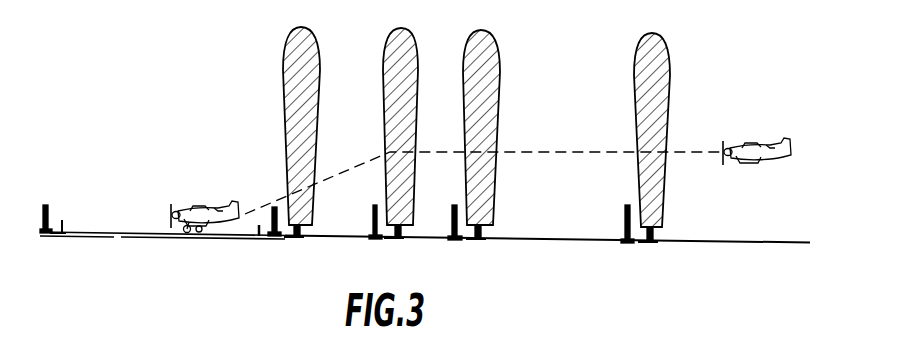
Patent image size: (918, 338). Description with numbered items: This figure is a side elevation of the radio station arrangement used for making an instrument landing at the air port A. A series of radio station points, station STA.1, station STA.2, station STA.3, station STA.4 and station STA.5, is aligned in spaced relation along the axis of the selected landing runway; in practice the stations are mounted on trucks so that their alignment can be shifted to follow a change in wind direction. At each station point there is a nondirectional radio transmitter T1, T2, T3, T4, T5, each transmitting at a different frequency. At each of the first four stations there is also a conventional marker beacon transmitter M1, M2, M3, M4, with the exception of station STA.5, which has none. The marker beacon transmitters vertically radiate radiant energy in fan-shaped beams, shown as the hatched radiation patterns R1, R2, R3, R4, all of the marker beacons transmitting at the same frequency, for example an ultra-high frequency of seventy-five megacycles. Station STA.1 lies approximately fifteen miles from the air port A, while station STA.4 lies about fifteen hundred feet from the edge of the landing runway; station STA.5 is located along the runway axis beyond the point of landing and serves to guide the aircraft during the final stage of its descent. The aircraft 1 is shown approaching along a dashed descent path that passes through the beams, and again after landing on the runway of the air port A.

The aircraft 1 is at (190, 210).
The air port A is at (146, 232).
The radiation pattern of marker beacon M1 R1 is at (660, 38).
The radiation pattern of marker beacon M2 R2 is at (496, 36).
The radiation pattern of marker beacon M3 R3 is at (412, 34).
The radiation pattern of marker beacon M4 R4 is at (312, 34).
The marker beacon transmitter M1 is at (655, 230).
The marker beacon transmitter M2 is at (482, 230).
The marker beacon transmitter M3 is at (400, 230).
The marker beacon transmitter M4 is at (302, 228).
The nondirectional radio transmitter T1 is at (627, 205).
The nondirectional radio transmitter T2 is at (455, 205).
The nondirectional radio transmitter T3 is at (375, 205).
The nondirectional radio transmitter T4 is at (275, 207).
The nondirectional radio transmitter T5 is at (45, 205).
The radio station point STA.1 is at (640, 243).
The radio station point STA.2 is at (470, 240).
The radio station point STA.3 is at (388, 240).
The radio station point STA.4 is at (287, 238).
The radio station point STA.5 is at (55, 234).